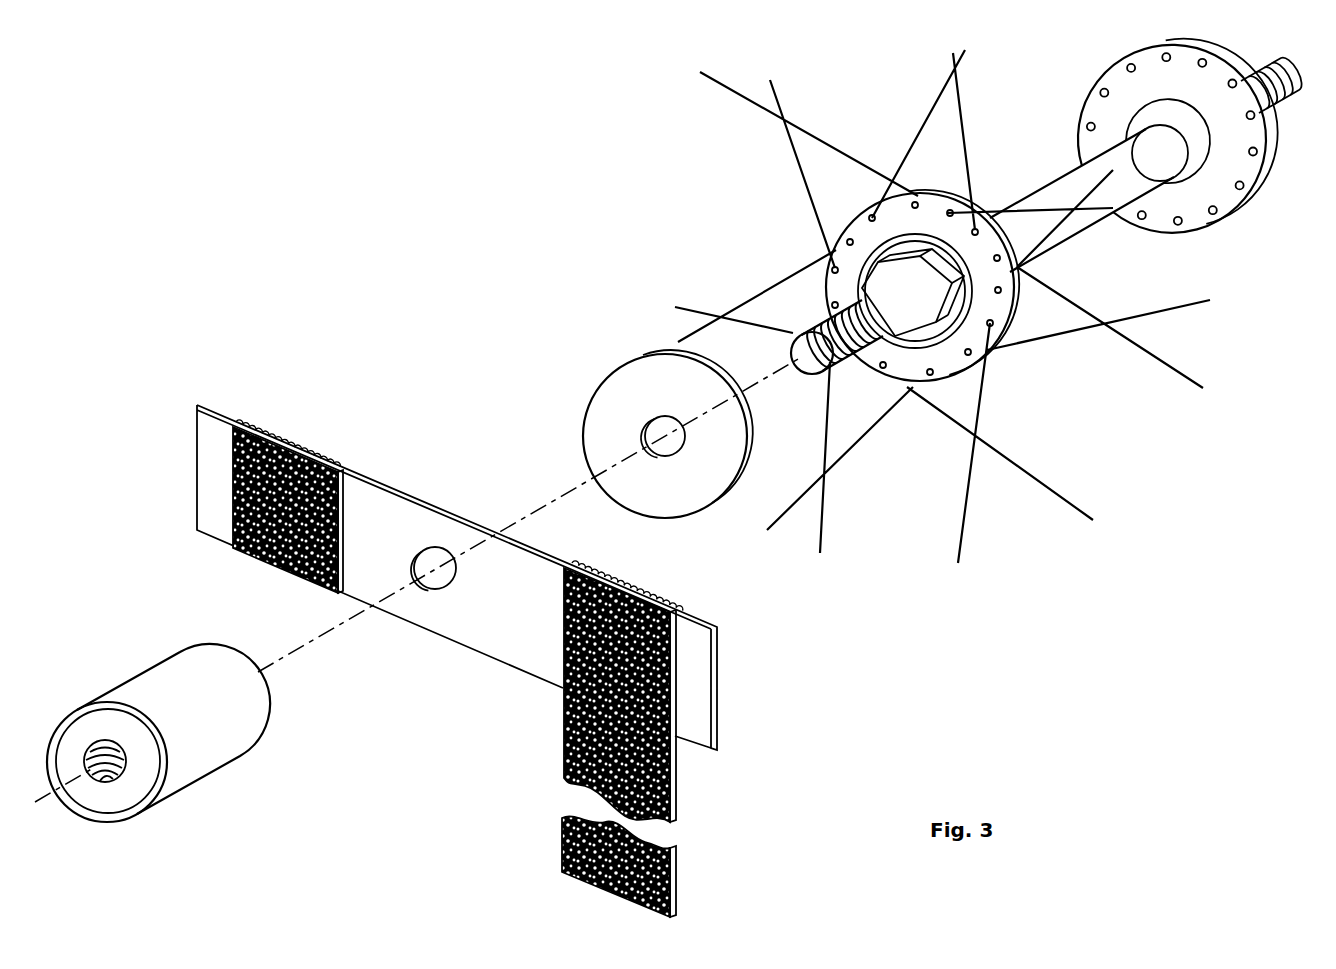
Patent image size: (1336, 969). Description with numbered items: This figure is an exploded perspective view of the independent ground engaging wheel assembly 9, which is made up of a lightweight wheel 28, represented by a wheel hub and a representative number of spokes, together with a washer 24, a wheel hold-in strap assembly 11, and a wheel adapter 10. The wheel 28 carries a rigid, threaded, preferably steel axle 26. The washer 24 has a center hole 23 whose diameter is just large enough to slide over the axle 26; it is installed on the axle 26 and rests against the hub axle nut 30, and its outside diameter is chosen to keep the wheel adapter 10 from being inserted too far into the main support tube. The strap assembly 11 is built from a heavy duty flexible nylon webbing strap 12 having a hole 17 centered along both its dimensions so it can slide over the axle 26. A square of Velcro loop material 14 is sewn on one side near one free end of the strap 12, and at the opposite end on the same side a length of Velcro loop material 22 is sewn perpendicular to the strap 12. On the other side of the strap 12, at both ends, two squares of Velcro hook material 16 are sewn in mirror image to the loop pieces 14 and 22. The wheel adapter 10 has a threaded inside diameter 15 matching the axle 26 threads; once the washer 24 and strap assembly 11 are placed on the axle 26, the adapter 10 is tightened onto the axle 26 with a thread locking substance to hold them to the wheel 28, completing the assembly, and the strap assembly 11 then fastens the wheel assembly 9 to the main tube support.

The independent ground engaging wheel assembly 9 is at (278, 218).
The wheel adapter 10 is at (133, 690).
The wheel hold-in strap assembly 11 is at (456, 786).
The webbing strap 12 is at (490, 637).
The Velcro loop material square 14 is at (270, 567).
The threaded inside diameter 15 is at (103, 783).
The Velcro hook material squares 16 is at (307, 443).
The hole 17 is at (440, 556).
The Velcro loop material 22 is at (673, 790).
The center hole 23 is at (663, 457).
The washer 24 is at (607, 410).
The axle 26 is at (810, 356).
The wheel 28 is at (1008, 315).
The hub axle nut 30 is at (913, 345).